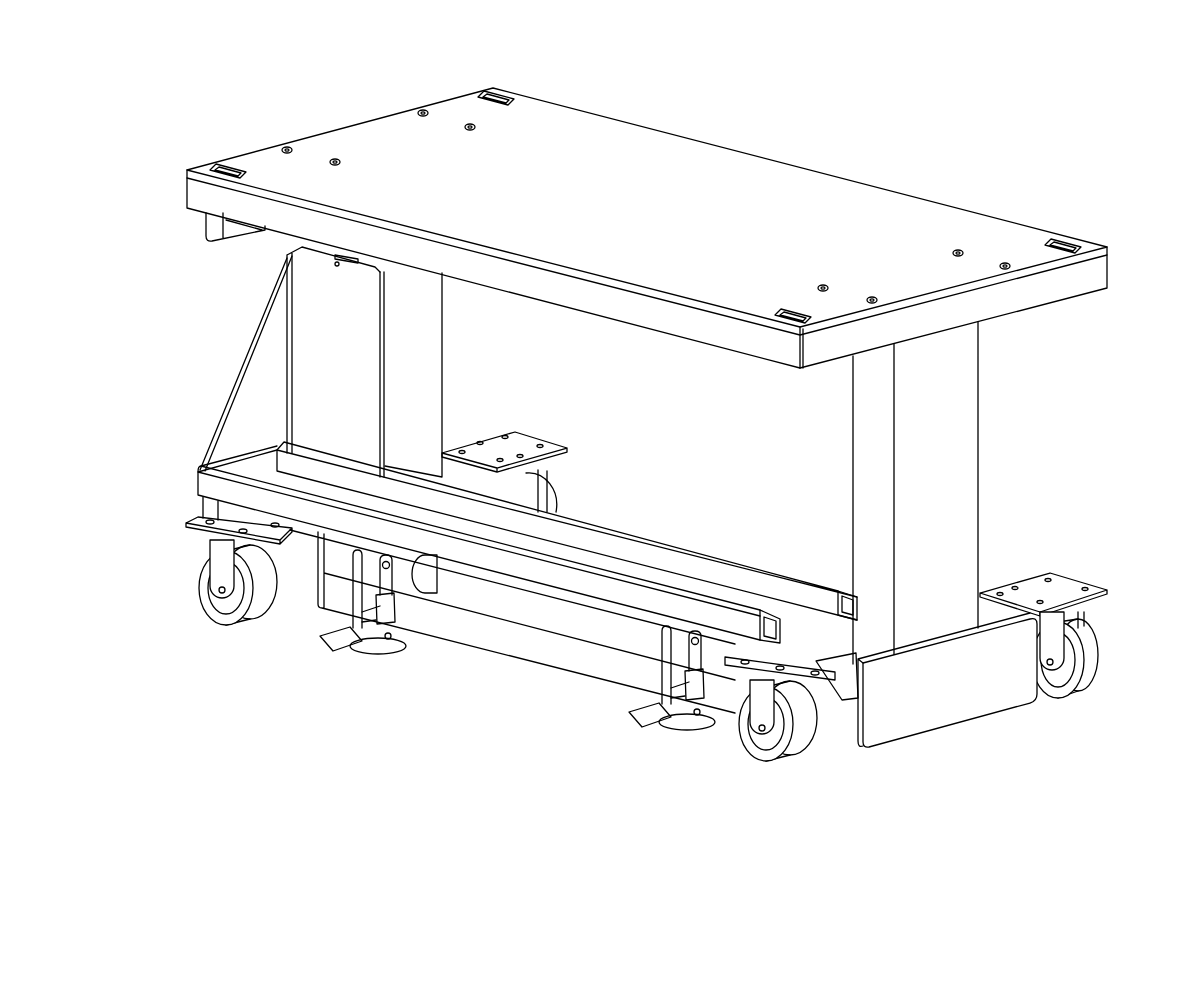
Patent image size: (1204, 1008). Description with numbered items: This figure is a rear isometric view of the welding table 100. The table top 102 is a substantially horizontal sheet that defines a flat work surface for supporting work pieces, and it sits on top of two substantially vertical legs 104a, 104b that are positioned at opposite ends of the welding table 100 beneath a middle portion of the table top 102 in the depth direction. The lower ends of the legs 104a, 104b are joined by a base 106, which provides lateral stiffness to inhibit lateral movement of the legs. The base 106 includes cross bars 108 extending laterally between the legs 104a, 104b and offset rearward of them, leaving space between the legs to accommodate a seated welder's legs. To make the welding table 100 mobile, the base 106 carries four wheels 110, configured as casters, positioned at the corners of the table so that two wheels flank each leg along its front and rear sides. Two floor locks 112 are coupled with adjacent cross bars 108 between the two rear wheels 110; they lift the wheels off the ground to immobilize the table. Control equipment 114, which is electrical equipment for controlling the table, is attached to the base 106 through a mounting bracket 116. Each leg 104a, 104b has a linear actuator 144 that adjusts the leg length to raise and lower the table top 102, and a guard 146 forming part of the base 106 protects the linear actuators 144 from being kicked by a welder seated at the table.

The welding table 100 is at (958, 130).
The table top 102 is at (620, 133).
The leg 104a is at (953, 466).
The leg 104b is at (422, 350).
The base 106 is at (667, 518).
The cross bars 108 is at (658, 580).
The wheels 110 is at (548, 502).
The floor locks 112 is at (370, 653).
The control equipment 114 is at (390, 383).
The mounting bracket 116 is at (248, 395).
The linear actuators 144 is at (423, 577).
The guard 146 is at (467, 580).